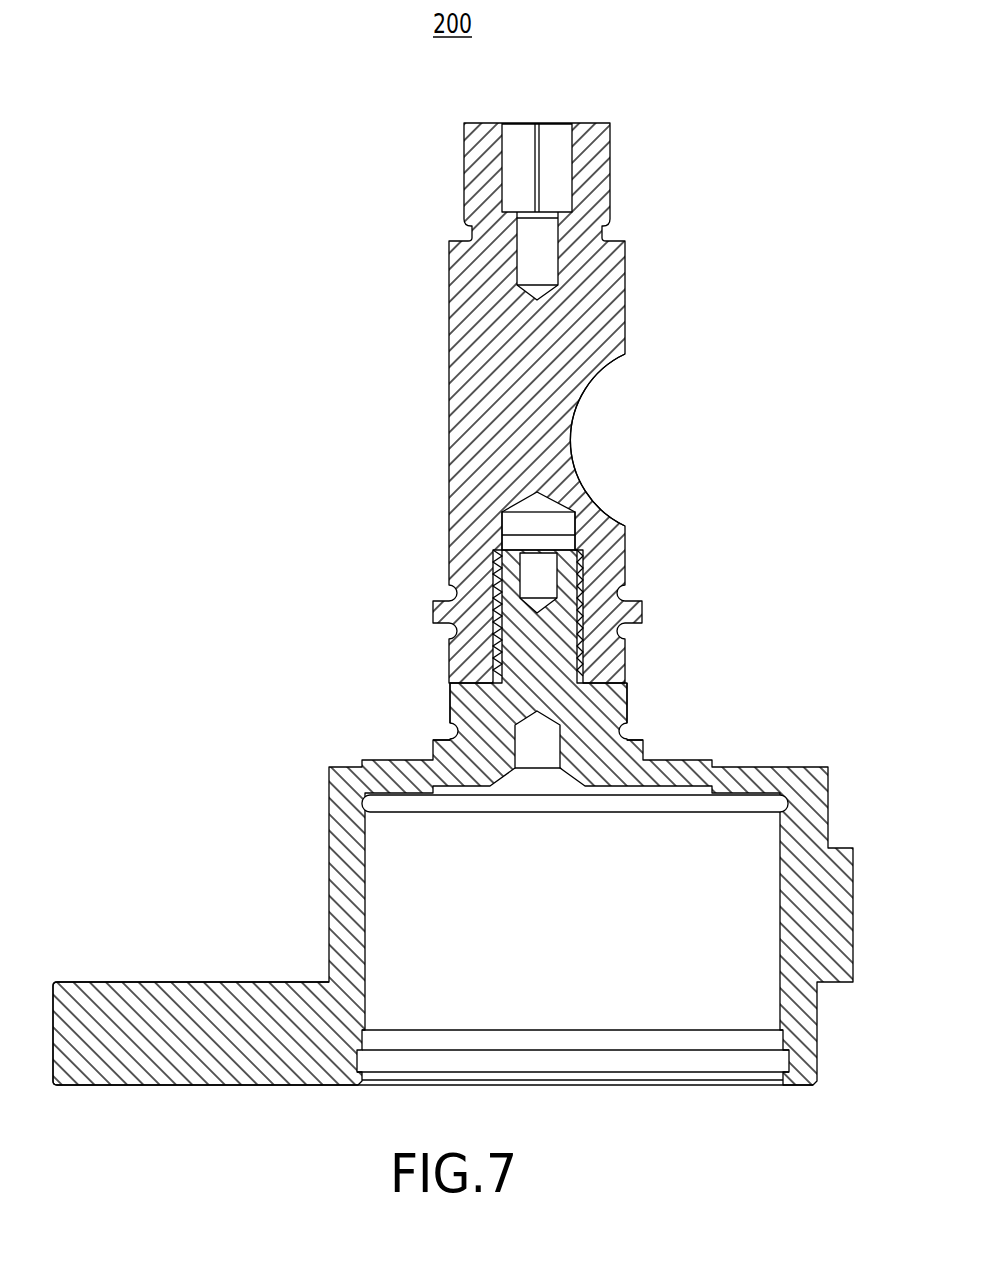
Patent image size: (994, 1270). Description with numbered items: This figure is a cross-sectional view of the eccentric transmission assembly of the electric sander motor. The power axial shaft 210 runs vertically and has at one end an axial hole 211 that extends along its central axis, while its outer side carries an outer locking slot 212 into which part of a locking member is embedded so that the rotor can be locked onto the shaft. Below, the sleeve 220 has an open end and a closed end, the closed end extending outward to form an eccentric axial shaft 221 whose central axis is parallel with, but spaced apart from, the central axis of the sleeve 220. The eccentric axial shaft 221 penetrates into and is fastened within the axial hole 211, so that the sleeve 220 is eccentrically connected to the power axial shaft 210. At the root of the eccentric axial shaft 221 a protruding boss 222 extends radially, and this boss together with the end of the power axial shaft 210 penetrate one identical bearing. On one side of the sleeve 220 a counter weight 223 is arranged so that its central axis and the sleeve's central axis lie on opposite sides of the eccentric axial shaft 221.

The power axial shaft 210 is at (652, 452).
The axial hole 211 is at (510, 523).
The outer locking slot 212 is at (602, 402).
The sleeve 220 is at (786, 738).
The eccentric axial shaft 221 is at (507, 612).
The protruding boss 222 is at (617, 707).
The counter weight 223 is at (145, 1000).